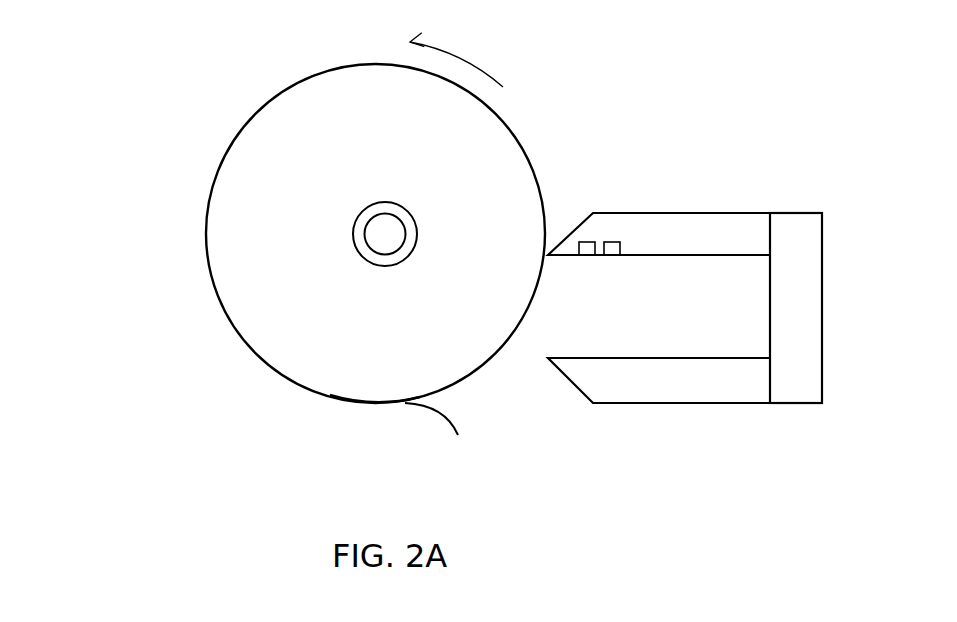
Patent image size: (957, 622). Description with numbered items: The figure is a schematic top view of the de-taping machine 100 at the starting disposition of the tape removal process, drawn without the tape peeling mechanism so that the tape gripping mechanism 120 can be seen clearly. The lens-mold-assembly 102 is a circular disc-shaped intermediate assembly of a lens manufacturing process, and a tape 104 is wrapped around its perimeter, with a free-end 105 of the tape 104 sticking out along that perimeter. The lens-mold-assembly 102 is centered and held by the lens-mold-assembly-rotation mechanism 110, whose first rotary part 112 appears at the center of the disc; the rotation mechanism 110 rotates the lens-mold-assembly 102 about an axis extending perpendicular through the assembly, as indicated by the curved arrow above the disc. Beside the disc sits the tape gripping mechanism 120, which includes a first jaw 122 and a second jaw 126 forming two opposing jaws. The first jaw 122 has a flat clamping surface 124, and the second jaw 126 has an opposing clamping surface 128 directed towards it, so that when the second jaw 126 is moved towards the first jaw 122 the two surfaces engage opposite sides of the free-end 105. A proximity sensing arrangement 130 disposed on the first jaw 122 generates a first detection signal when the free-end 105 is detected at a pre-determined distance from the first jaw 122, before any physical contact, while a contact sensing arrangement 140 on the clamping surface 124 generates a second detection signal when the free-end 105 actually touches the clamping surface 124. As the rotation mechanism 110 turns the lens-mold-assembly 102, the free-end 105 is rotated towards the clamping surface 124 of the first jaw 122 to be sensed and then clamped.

The de-taping machine 100 is at (718, 76).
The lens-mold-assembly 102 is at (507, 158).
The tape 104 is at (352, 402).
The free-end 105 is at (437, 412).
The lens-mold-assembly-rotation mechanism 110 is at (377, 233).
The first rotary part 112 is at (268, 269).
The tape gripping mechanism 120 is at (758, 212).
The first jaw 122 is at (713, 212).
The clamping surface 124 is at (710, 255).
The second jaw 126 is at (712, 392).
The opposing clamping surface 128 is at (658, 358).
The proximity sensing arrangement 130 is at (590, 255).
The contact sensing arrangement 140 is at (612, 255).